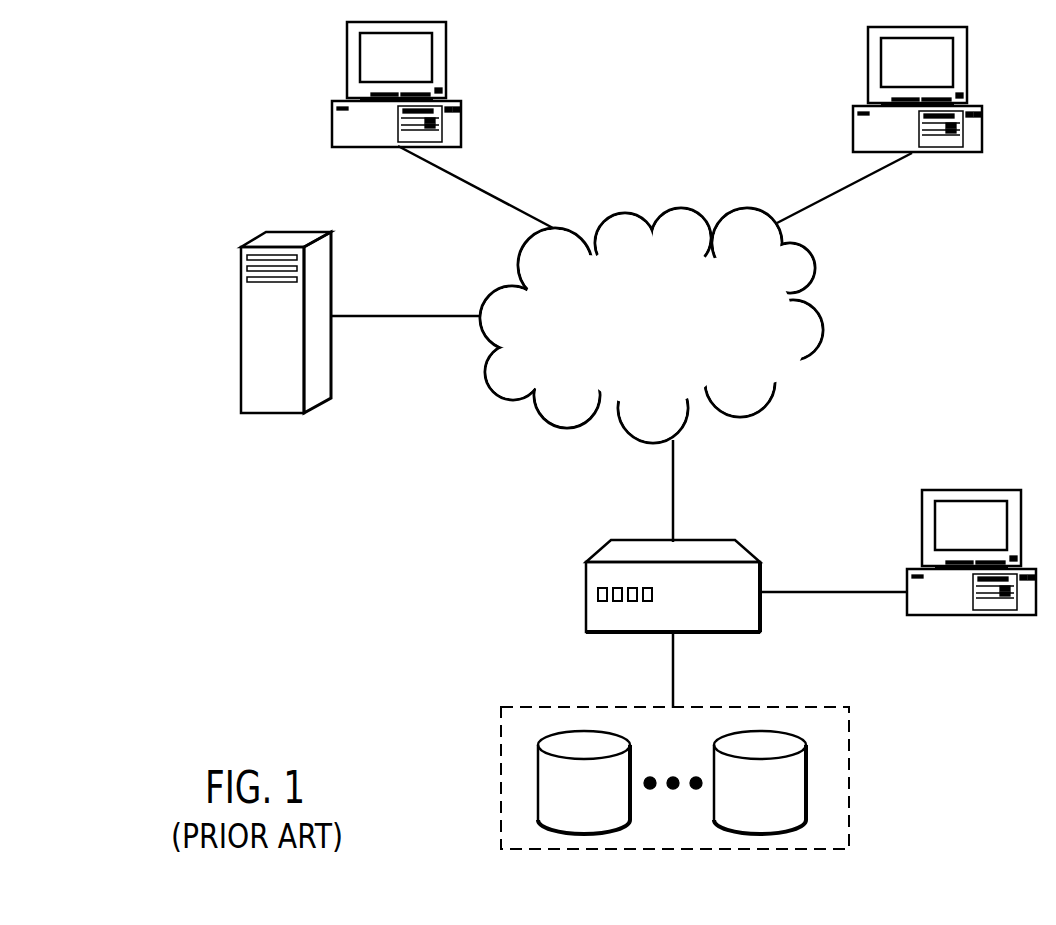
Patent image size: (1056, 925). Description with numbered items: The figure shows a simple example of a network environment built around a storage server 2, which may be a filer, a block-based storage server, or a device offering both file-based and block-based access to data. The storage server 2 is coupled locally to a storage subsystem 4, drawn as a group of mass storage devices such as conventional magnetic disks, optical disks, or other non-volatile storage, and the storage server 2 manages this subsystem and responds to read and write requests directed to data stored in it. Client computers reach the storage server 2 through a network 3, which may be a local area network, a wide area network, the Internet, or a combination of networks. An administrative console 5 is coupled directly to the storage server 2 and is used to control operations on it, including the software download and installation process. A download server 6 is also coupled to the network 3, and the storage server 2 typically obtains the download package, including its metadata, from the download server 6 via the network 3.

The storage server 2 is at (747, 596).
The network 3 is at (766, 263).
The storage subsystem 4 is at (834, 746).
The administrative console 5 is at (951, 604).
The download server 6 is at (295, 402).